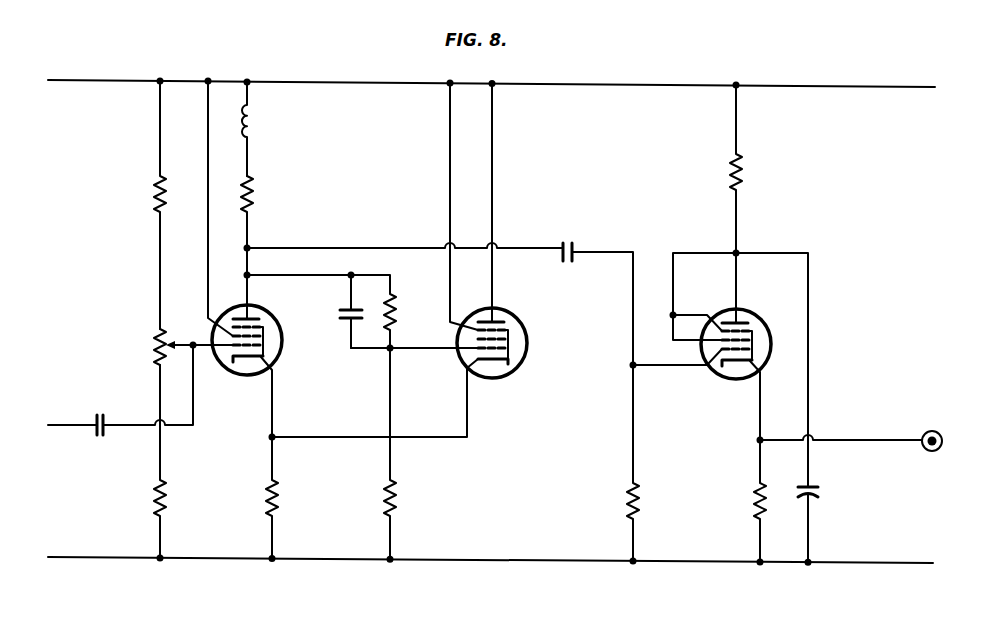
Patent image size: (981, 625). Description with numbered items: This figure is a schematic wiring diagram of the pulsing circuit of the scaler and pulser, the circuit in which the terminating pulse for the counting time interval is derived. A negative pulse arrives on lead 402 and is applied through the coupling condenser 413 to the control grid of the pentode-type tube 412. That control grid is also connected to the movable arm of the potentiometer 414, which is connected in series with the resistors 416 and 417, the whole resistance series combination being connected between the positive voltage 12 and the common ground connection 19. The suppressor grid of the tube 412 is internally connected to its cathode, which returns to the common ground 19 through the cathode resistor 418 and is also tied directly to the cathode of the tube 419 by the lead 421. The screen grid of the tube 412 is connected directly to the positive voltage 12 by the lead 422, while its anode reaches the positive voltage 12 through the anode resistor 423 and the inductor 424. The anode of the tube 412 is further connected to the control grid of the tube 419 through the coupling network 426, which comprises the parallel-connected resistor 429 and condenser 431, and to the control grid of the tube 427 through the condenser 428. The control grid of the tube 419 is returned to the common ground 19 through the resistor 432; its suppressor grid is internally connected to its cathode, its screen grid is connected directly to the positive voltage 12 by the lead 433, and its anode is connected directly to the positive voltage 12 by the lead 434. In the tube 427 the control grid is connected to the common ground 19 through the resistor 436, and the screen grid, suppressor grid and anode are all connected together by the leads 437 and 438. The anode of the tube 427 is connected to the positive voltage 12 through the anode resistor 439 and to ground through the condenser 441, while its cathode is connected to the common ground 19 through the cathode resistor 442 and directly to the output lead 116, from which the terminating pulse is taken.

The positive voltage 12 is at (66, 80).
The common ground connection 19 is at (60, 557).
The output lead 116 is at (830, 444).
The lead 402 is at (56, 425).
The pentode-type tube 412 is at (233, 375).
The coupling condenser 413 is at (99, 420).
The potentiometer 414 is at (151, 346).
The resistor 416 is at (154, 192).
The resistor 417 is at (154, 500).
The cathode resistor 418 is at (266, 500).
The tube 419 is at (521, 325).
The lead 421 is at (326, 439).
The lead 422 is at (206, 262).
The anode resistor 423 is at (255, 190).
The inductor 424 is at (256, 122).
The coupling network 426 is at (357, 339).
The tube 427 is at (750, 321).
The condenser 428 is at (566, 249).
The resistor 429 is at (396, 305).
The condenser 431 is at (340, 314).
The resistor 432 is at (396, 498).
The lead 433 is at (449, 170).
The lead 434 is at (494, 170).
The resistor 436 is at (627, 498).
The lead 437 is at (672, 336).
The lead 438 is at (672, 301).
The anode resistor 439 is at (744, 172).
The condenser 441 is at (819, 493).
The cathode resistor 442 is at (757, 501).